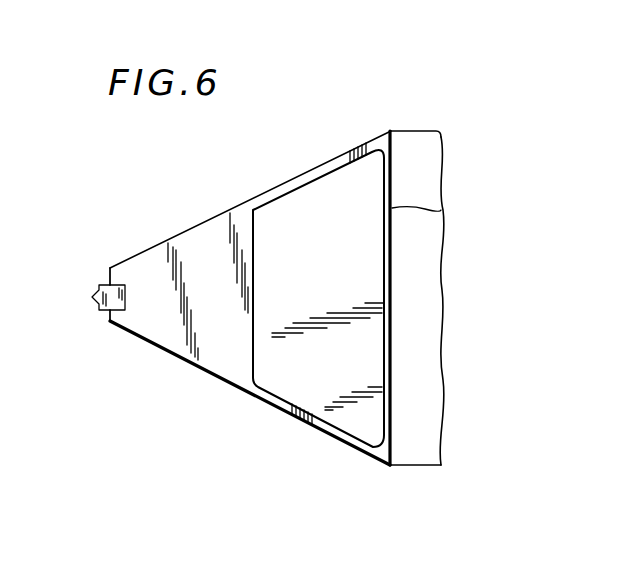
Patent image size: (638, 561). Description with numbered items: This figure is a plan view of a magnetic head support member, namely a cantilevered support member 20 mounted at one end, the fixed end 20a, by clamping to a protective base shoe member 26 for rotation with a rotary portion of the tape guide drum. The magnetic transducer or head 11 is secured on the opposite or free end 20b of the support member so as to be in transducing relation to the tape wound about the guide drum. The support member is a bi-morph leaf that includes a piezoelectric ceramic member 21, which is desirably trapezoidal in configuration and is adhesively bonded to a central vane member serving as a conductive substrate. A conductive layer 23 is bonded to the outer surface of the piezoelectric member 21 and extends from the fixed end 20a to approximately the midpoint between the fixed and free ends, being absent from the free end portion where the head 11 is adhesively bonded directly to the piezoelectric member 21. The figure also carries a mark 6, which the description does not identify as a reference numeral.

The cantilevered support member 20 is at (177, 230).
The piezoelectric ceramic member 21 is at (142, 267).
The conductive layer 23 is at (310, 197).
The magnetic transducer or head 11 is at (99, 290).
The free end 20b is at (108, 318).
The fixed end 20a is at (511, 228).
The protective base shoe member 26 is at (428, 285).
The groove 6 is at (362, 180).